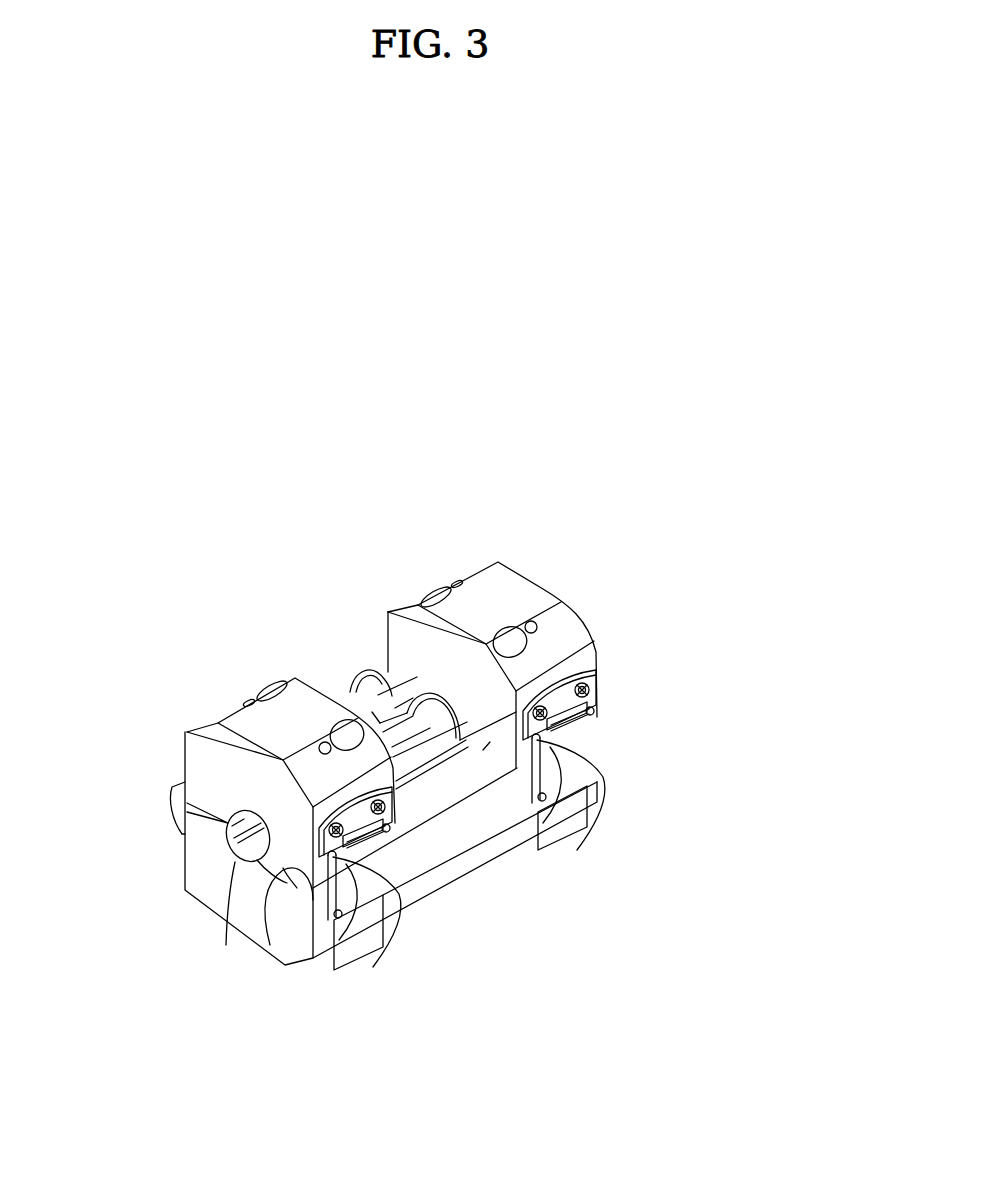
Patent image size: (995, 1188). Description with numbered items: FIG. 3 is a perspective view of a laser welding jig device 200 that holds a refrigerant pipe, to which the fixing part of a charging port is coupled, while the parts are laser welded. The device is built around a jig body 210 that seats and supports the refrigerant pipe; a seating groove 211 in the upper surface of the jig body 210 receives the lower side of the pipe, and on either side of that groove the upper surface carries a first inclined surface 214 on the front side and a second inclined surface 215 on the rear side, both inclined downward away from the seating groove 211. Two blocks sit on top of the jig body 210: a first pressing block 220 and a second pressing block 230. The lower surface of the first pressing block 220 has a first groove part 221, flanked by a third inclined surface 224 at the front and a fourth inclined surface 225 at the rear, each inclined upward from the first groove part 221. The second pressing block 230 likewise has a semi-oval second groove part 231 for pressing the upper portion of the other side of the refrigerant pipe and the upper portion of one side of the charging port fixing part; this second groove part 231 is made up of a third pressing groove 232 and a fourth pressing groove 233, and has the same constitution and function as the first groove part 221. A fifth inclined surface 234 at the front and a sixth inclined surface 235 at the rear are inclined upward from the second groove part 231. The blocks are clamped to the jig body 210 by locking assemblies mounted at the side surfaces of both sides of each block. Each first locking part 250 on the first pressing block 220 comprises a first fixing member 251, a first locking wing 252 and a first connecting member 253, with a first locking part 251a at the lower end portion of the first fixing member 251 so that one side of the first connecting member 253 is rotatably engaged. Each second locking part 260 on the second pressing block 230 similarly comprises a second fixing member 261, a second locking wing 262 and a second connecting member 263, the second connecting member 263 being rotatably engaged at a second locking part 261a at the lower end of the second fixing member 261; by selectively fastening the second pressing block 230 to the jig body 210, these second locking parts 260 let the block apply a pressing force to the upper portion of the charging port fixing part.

The laser welding jig device 200 is at (548, 462).
The jig body 210 is at (278, 985).
The seating groove 211 is at (248, 856).
The first inclined surface 214 is at (284, 967).
The second inclined surface 215 is at (178, 832).
The first pressing block 220 is at (195, 708).
The first groove part 221 is at (229, 831).
The third inclined surface 224 is at (297, 888).
The fourth inclined surface 225 is at (176, 800).
The second pressing block 230 is at (548, 575).
The second groove part 231 is at (277, 630).
The third pressing groove 232 is at (372, 712).
The fourth pressing groove 233 is at (364, 690).
The fifth inclined surface 234 is at (490, 742).
The sixth inclined surface 235 is at (371, 683).
The first locking part 250 is at (491, 912).
The first fixing member 251 is at (385, 797).
The first locking part 251a is at (372, 968).
The first locking wing 252 is at (387, 897).
The first connecting member 253 is at (385, 832).
The second locking part 260 is at (691, 666).
The second fixing member 261 is at (597, 680).
The second locking part 261a is at (603, 778).
The second locking wing 262 is at (603, 757).
The second connecting member 263 is at (592, 722).